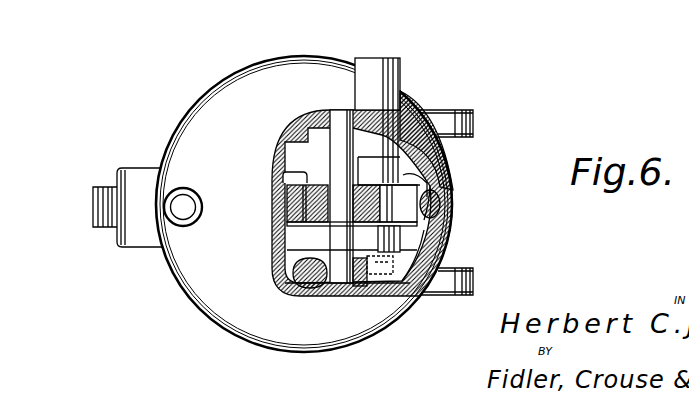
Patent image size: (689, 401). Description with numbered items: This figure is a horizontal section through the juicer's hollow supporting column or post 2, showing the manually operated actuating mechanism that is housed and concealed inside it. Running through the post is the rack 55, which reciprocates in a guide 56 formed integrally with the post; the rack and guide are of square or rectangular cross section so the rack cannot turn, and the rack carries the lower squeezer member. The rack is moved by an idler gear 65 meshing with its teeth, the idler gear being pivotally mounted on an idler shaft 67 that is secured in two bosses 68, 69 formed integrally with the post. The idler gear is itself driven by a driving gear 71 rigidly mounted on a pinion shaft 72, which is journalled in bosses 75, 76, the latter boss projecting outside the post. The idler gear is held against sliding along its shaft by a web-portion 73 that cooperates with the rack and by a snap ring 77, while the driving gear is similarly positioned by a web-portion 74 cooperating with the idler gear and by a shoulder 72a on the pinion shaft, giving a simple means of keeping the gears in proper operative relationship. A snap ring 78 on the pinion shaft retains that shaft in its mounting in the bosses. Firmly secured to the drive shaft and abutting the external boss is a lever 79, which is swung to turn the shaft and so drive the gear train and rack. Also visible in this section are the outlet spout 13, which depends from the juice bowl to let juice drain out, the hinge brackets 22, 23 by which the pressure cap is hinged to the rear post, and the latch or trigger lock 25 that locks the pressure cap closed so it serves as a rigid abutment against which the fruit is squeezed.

The supporting column or post 2 is at (285, 125).
The outlet spout 13 is at (181, 188).
The hinge brackets 22 is at (476, 128).
The brackets 23 is at (476, 113).
The latch or trigger lock 25 is at (100, 212).
The rack 55 is at (287, 208).
The guide 56 is at (283, 176).
The idler gear 65 is at (400, 238).
The idler shaft 67 is at (357, 297).
The boss 68 is at (308, 110).
The boss 69 is at (300, 297).
The driving gear 71 is at (447, 187).
The pinion shaft 72 is at (440, 216).
The shoulder 72a is at (432, 170).
The web-portion 73 is at (282, 234).
The web-portion 74 is at (420, 185).
The boss 75 is at (440, 248).
The boss 76 is at (398, 105).
The snap ring 77 is at (295, 270).
The snap ring 78 is at (417, 113).
The lever 79 is at (402, 62).